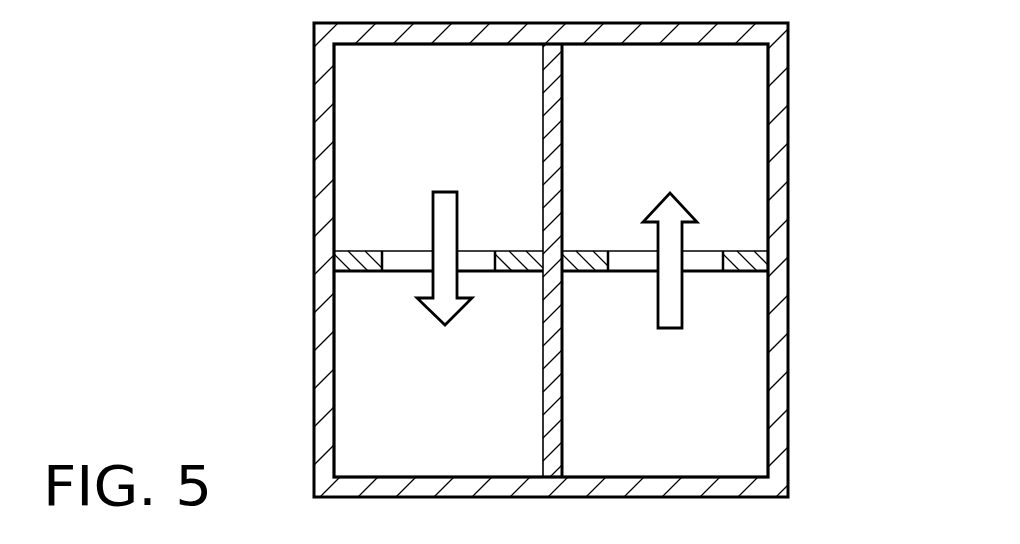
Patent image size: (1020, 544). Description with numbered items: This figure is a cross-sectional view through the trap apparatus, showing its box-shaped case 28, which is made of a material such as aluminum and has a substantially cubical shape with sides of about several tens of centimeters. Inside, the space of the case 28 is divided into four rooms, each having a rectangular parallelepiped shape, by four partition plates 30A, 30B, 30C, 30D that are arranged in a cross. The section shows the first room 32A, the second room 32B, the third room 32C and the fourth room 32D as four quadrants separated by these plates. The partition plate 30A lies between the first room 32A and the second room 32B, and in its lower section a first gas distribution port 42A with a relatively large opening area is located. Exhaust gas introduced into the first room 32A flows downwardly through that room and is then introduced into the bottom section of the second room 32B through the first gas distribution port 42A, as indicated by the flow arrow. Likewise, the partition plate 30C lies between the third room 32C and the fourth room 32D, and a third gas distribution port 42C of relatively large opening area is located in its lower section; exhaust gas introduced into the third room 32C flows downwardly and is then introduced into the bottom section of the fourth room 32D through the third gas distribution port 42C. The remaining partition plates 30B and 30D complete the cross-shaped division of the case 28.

The case 28 is at (796, 390).
The partition plate 30A is at (759, 242).
The partition plate 30B is at (572, 144).
The partition plate 30C is at (360, 239).
The partition plate 30D is at (571, 417).
The first room 32A is at (694, 413).
The second room 32B is at (698, 152).
The third room 32C is at (473, 152).
The fourth room 32D is at (438, 374).
The first gas distribution port 42A is at (703, 283).
The third gas distribution port 42C is at (399, 281).